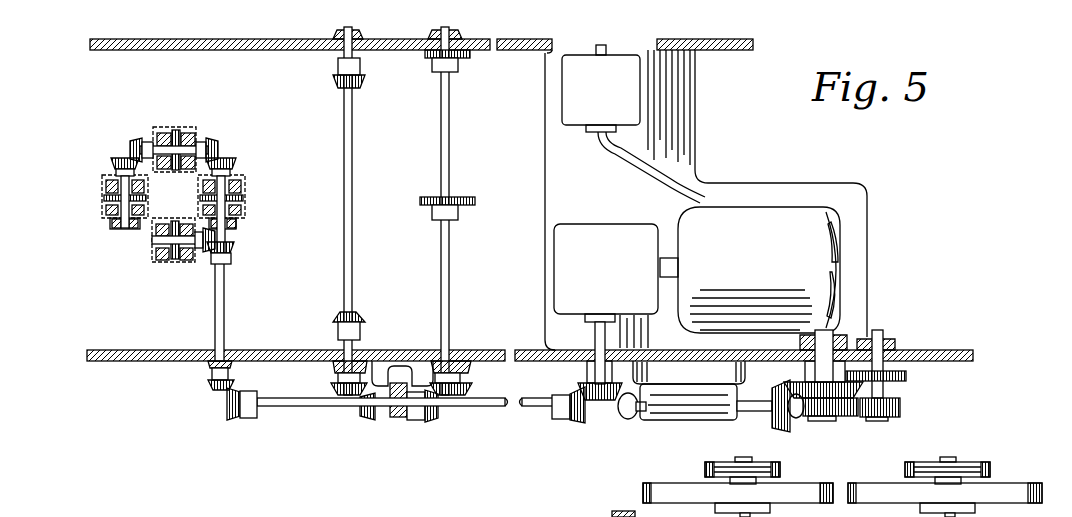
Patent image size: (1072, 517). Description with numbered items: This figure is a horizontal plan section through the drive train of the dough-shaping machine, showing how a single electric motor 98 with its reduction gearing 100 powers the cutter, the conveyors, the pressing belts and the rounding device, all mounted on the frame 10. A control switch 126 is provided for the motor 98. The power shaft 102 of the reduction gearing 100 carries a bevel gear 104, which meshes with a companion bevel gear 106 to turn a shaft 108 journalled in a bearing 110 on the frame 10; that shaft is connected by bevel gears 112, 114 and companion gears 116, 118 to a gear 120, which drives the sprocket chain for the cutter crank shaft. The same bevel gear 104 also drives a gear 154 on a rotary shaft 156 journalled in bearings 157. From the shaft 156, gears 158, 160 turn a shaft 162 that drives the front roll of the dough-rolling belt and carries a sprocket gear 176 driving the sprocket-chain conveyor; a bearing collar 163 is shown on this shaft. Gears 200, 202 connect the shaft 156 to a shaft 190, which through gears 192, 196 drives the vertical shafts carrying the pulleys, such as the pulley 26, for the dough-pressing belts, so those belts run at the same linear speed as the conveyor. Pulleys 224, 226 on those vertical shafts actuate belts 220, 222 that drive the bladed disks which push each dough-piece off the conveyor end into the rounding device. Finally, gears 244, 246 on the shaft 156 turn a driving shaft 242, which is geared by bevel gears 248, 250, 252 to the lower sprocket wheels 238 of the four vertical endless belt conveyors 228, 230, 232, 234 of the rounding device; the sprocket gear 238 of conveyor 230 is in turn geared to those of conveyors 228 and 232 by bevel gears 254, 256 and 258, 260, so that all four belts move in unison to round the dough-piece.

The frame 10 is at (936, 350).
The pulley 26 is at (1005, 495).
The electric motor 98 is at (785, 212).
The reduction gearing 100 is at (610, 228).
The power shaft 102 is at (596, 336).
The bevel gear 104 is at (600, 401).
The companion bevel gear 106 is at (628, 420).
The shaft 108 is at (755, 412).
The bearing 110 is at (688, 410).
The bevel gear 112 is at (786, 426).
The bevel gear 114 is at (804, 418).
The companion gear 116 is at (847, 418).
The companion gear 118 is at (896, 412).
The gear 120 is at (906, 376).
The control switch 126 is at (640, 110).
The gear 154 is at (576, 422).
The rotary shaft 156 is at (520, 408).
The bearings 157 is at (398, 418).
The gear 158 is at (430, 420).
The gear 160 is at (468, 392).
The shaft 162 is at (452, 306).
The bearing collar 163 is at (462, 58).
The sprocket gear 176 is at (471, 199).
The shaft 190 is at (352, 258).
The gear 192 is at (362, 82).
The gear 196 is at (363, 313).
The gear 200 is at (367, 420).
The gear 202 is at (348, 396).
The belt 220 is at (705, 468).
The belt 222 is at (905, 468).
The pulley 224 is at (748, 461).
The pulley 226 is at (965, 461).
The endless belt conveyor 228 is at (250, 191).
The endless belt conveyor 230 is at (163, 127).
The endless belt conveyor 232 is at (100, 203).
The endless belt conveyor 234 is at (188, 270).
The lower sprocket wheel 238 is at (188, 127).
The driving shaft 242 is at (244, 178).
The gear 244 is at (232, 420).
The gear 246 is at (210, 390).
The bevel gear 248 is at (230, 256).
The bevel gear 250 is at (228, 246).
The bevel gear 252 is at (236, 234).
The bevel gear 254 is at (233, 160).
The bevel gear 256 is at (216, 143).
The bevel gear 258 is at (138, 140).
The bevel gear 260 is at (116, 158).